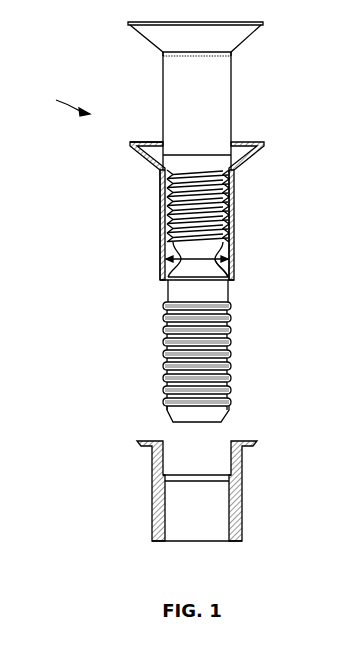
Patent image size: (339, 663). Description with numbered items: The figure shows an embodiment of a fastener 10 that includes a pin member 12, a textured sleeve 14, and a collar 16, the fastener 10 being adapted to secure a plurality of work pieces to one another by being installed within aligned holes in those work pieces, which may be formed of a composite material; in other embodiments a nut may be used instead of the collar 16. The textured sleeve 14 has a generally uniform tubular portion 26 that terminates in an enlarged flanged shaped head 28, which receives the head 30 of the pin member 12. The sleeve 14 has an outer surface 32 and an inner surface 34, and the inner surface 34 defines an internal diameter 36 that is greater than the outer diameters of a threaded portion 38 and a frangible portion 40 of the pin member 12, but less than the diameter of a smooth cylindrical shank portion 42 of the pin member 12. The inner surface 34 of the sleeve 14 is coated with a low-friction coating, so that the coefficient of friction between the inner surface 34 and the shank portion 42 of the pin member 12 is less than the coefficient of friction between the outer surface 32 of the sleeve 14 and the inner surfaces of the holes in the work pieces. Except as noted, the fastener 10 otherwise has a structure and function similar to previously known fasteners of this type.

The fastener 10 is at (60, 103).
The pin member 12 is at (222, 130).
The textured sleeve 14 is at (152, 163).
The collar 16 is at (153, 505).
The tubular portion 26 is at (162, 267).
The flanged shaped head 28 is at (145, 148).
The head 30 is at (245, 35).
The outer surface 32 is at (233, 257).
The inner surface 34 is at (232, 270).
The internal diameter 36 is at (172, 258).
The threaded portion 38 is at (222, 212).
The frangible portion 40 is at (198, 330).
The smooth cylindrical shank portion 42 is at (178, 97).